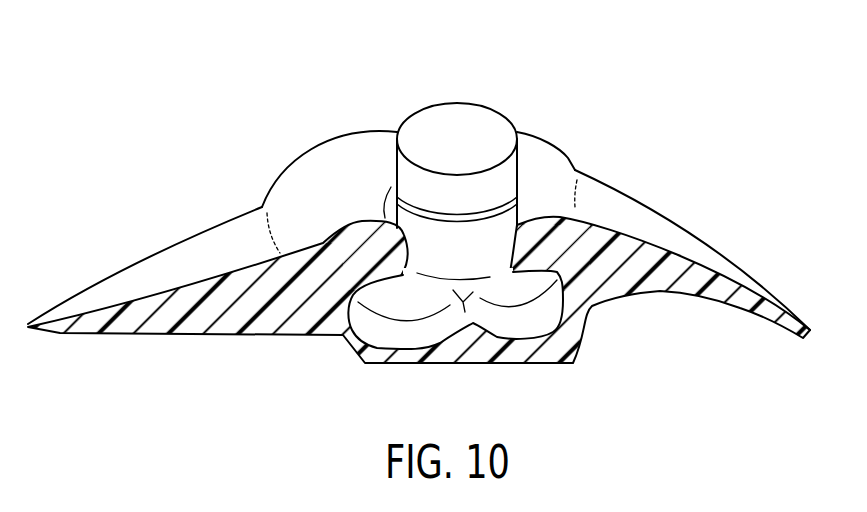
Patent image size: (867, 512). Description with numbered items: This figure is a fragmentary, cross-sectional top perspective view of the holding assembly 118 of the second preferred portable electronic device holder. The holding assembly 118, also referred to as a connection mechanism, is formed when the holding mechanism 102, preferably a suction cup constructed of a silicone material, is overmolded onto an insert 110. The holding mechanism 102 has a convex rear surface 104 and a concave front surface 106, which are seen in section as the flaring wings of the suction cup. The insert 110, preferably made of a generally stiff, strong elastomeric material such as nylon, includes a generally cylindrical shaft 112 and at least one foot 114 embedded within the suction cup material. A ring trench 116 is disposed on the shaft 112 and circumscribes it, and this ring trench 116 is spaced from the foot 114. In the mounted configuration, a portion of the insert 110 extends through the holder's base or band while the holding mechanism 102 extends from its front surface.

The holding mechanism 102 is at (795, 320).
The convex rear surface 104 is at (87, 296).
The concave front surface 106 is at (125, 320).
The insert 110 is at (401, 102).
The shaft 112 is at (480, 247).
The foot 114 is at (380, 340).
The ring trench 116 is at (490, 208).
The holding assembly 118 is at (182, 128).